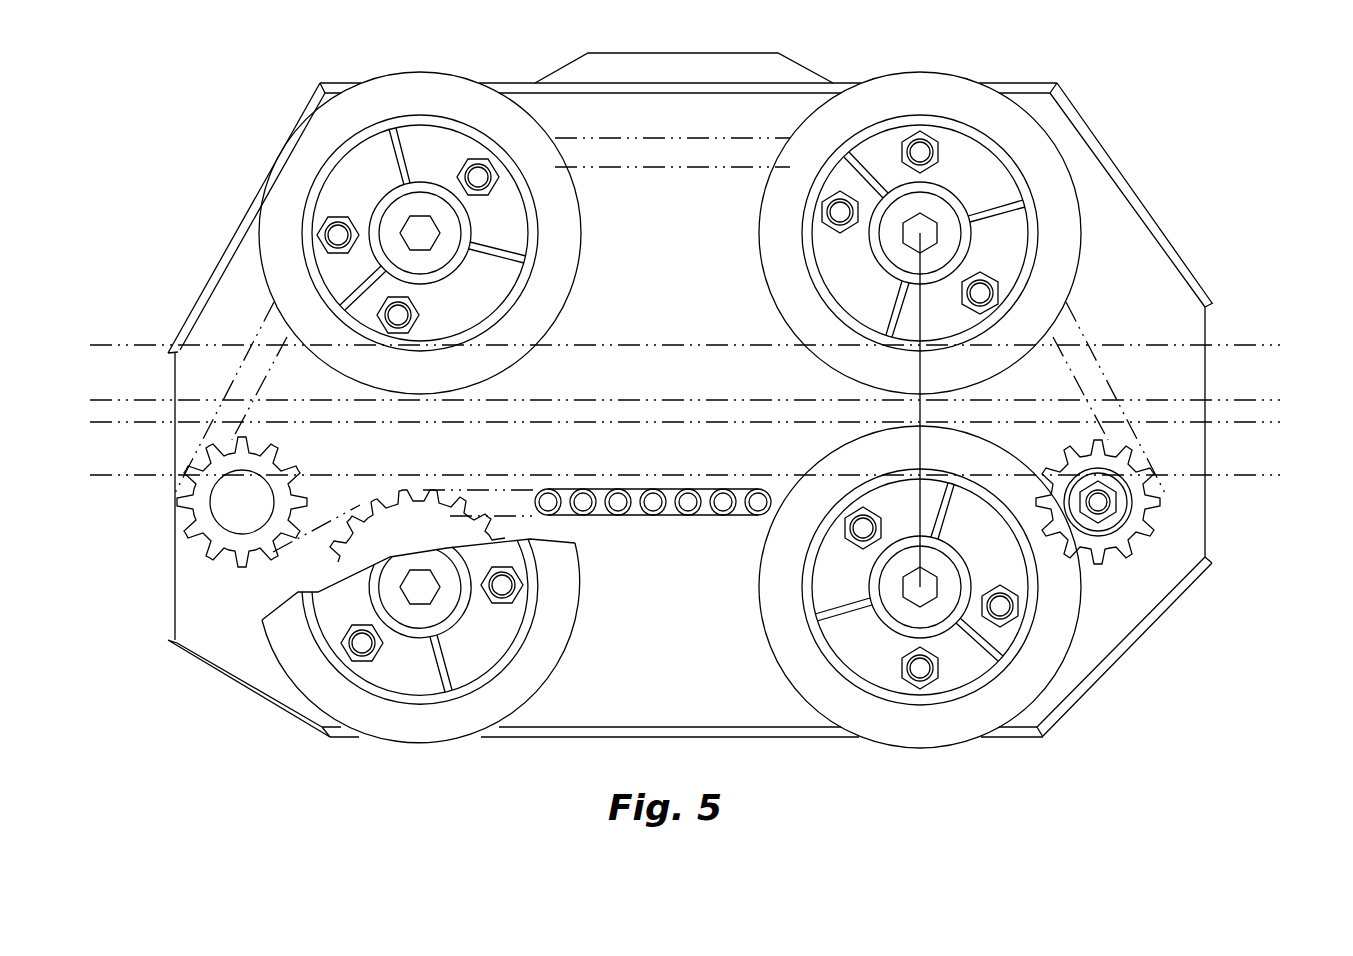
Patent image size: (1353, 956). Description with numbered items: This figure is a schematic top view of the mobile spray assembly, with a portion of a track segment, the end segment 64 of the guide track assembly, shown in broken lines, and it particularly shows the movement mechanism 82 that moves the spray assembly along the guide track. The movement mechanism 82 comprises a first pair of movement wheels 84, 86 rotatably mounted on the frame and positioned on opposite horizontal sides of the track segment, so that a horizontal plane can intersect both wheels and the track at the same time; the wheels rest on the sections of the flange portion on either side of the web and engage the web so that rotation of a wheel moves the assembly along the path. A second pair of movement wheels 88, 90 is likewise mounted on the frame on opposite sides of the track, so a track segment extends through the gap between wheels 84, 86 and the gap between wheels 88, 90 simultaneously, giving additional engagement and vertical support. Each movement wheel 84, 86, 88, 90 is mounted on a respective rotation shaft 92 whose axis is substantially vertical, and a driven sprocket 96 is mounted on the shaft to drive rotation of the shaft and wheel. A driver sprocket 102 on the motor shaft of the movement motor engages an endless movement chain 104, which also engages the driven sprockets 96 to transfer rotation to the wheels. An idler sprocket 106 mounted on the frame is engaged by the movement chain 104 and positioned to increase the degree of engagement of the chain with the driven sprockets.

The end segment 64 is at (1227, 345).
The movement mechanism 82 is at (1118, 88).
The movement wheel 84 is at (387, 737).
The movement wheel 86 is at (410, 78).
The movement wheel 88 is at (933, 735).
The movement wheel 90 is at (945, 85).
The rotation shaft 92 is at (418, 588).
The driven sprocket 96 is at (426, 527).
The driver sprocket 102 is at (198, 504).
The movement chain 104 is at (653, 514).
The idler sprocket 106 is at (1148, 500).